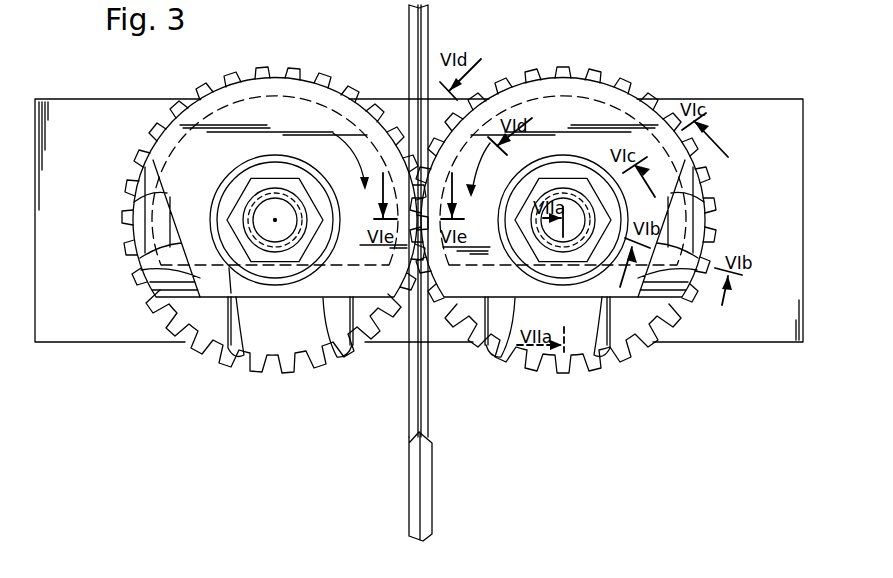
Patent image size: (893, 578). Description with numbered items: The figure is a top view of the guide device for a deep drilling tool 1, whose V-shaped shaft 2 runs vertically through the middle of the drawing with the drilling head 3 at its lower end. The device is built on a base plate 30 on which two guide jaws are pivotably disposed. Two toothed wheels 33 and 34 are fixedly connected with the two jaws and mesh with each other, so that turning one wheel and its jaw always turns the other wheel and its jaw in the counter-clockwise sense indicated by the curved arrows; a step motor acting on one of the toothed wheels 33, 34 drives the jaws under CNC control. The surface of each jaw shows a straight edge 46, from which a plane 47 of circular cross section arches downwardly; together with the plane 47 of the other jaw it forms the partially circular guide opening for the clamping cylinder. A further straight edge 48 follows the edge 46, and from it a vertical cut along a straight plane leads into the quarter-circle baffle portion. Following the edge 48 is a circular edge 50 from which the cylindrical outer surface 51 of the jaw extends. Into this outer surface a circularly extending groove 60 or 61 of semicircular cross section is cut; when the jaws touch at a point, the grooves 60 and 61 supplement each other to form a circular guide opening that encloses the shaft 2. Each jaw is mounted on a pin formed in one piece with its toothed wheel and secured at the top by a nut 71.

The deep drilling tool 1 is at (392, 495).
The shaft 2 is at (412, 53).
The drilling head 3 is at (430, 527).
The base plate 30 is at (782, 107).
The toothed wheel 33 is at (643, 320).
The toothed wheel 34 is at (215, 318).
The straight edge 46 is at (326, 310).
The plane 47 is at (243, 357).
The straight edge 48 is at (134, 202).
The circular edge 50 is at (672, 98).
The cylindrical outer surface 51 is at (635, 92).
The groove 60 is at (600, 98).
The groove 61 is at (252, 100).
The nut 71 is at (268, 190).